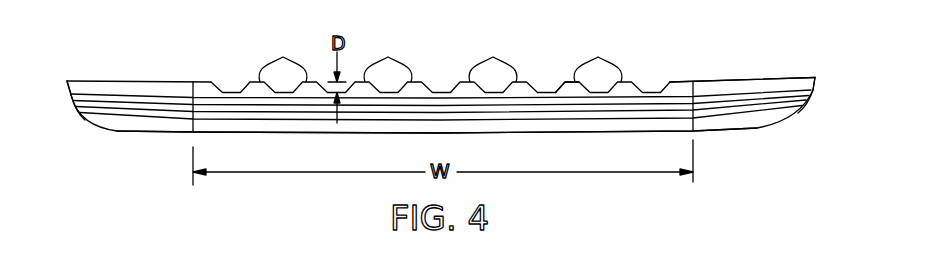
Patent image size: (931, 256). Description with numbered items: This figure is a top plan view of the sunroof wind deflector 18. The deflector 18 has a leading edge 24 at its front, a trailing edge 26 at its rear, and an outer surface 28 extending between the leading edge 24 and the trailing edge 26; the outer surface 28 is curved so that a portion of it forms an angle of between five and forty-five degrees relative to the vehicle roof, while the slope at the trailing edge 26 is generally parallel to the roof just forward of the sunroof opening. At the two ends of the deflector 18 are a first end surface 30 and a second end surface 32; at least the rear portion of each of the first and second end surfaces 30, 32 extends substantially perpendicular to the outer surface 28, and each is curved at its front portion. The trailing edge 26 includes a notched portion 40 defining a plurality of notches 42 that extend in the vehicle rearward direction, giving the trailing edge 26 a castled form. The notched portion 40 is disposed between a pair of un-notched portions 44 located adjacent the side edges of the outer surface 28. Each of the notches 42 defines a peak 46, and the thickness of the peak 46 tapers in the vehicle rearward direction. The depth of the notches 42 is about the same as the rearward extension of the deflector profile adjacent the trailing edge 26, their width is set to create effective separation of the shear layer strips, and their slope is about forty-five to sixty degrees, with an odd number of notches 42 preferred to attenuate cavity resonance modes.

The sunroof wind deflector 18 is at (754, 78).
The leading edge 24 is at (730, 130).
The trailing edge 26 is at (713, 78).
The outer surface 28 is at (544, 115).
The first end surface 30 is at (815, 88).
The second end surface 32 is at (70, 95).
The notched portion 40 is at (251, 81).
The notches 42 is at (283, 58).
The un-notched portions 44 is at (132, 98).
The peak 46 is at (565, 81).